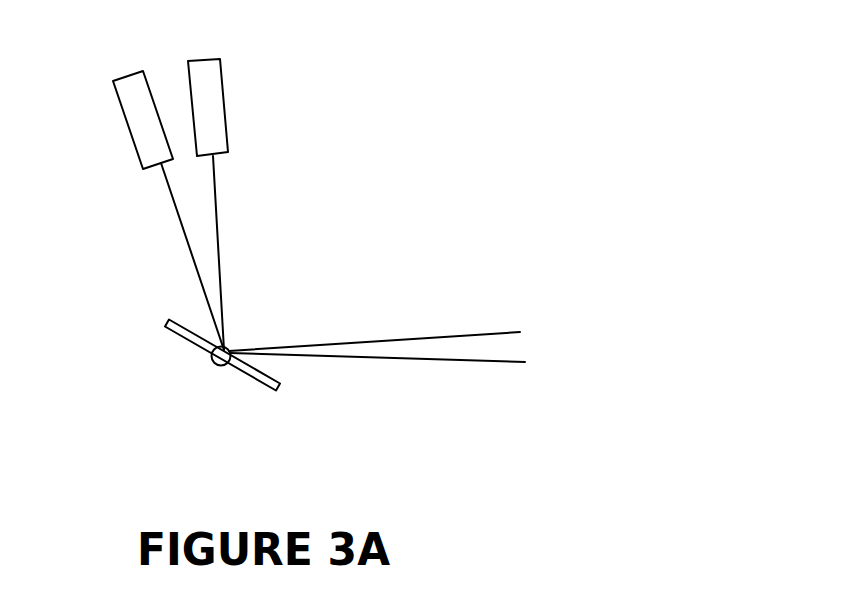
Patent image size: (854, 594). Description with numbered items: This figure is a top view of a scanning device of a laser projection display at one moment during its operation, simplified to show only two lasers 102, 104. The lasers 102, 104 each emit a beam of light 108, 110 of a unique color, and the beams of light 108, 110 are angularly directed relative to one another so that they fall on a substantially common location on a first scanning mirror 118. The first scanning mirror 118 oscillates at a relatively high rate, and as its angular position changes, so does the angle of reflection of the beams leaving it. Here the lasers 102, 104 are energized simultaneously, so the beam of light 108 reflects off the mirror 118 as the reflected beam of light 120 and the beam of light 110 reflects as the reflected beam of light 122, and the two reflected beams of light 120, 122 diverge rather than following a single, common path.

The laser 102 is at (133, 104).
The laser 104 is at (213, 80).
The beam of light 108 is at (176, 219).
The beam of light 110 is at (218, 252).
The first scanning mirror 118 is at (261, 381).
The reflected beam of light 120 is at (473, 363).
The reflected beam of light 122 is at (459, 332).